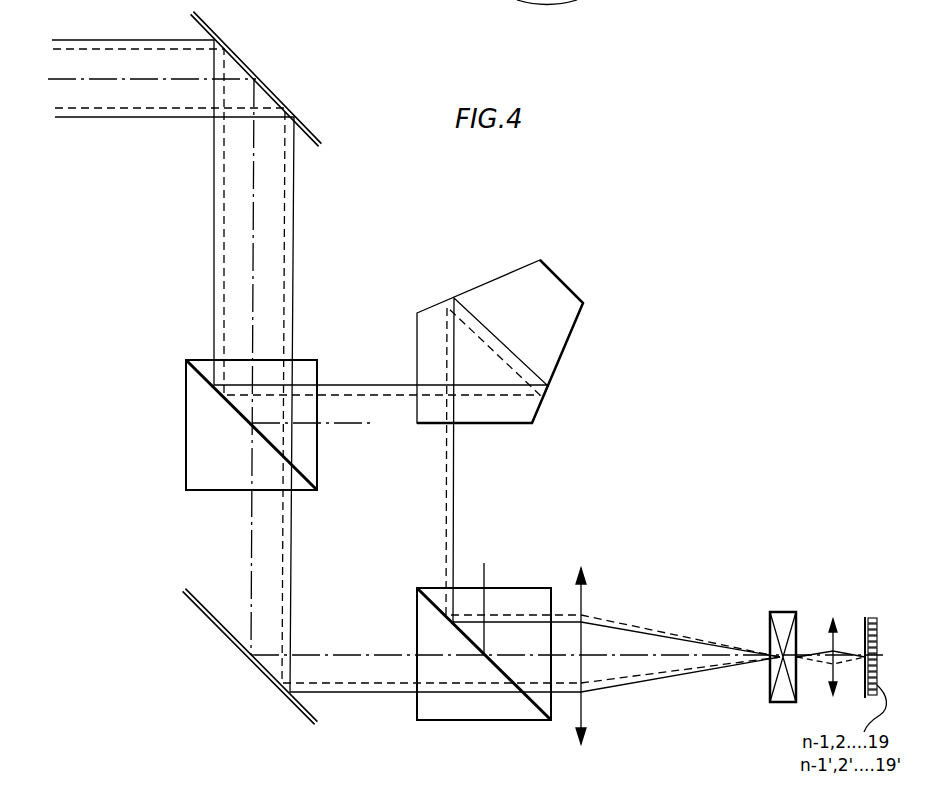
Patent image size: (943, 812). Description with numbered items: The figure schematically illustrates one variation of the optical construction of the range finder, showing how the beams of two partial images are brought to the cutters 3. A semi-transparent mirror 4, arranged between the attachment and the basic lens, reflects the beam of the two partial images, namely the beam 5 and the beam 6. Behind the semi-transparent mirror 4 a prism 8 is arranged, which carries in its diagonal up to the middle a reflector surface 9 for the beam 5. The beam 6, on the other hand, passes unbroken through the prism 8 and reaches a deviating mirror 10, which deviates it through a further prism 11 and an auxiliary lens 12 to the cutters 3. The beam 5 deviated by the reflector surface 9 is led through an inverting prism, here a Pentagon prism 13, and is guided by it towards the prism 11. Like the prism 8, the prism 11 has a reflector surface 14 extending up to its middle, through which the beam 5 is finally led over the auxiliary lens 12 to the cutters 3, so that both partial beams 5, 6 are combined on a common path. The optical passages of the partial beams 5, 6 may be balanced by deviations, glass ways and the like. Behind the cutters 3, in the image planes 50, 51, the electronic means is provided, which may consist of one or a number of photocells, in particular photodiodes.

The cutters 3 is at (783, 612).
The semi-transparent mirror 4 is at (236, 55).
The beam 5 is at (223, 230).
The beam 6 is at (285, 230).
The prism 8 is at (186, 463).
The reflector surface 9 is at (223, 403).
The deviating mirror 10 is at (226, 633).
The prism 11 is at (466, 720).
The auxiliary lens 12 is at (586, 729).
The Pentagon prism 13 is at (573, 341).
The reflector surface 14 is at (458, 628).
The image plane 50 is at (862, 630).
The image plane 51 is at (862, 690).